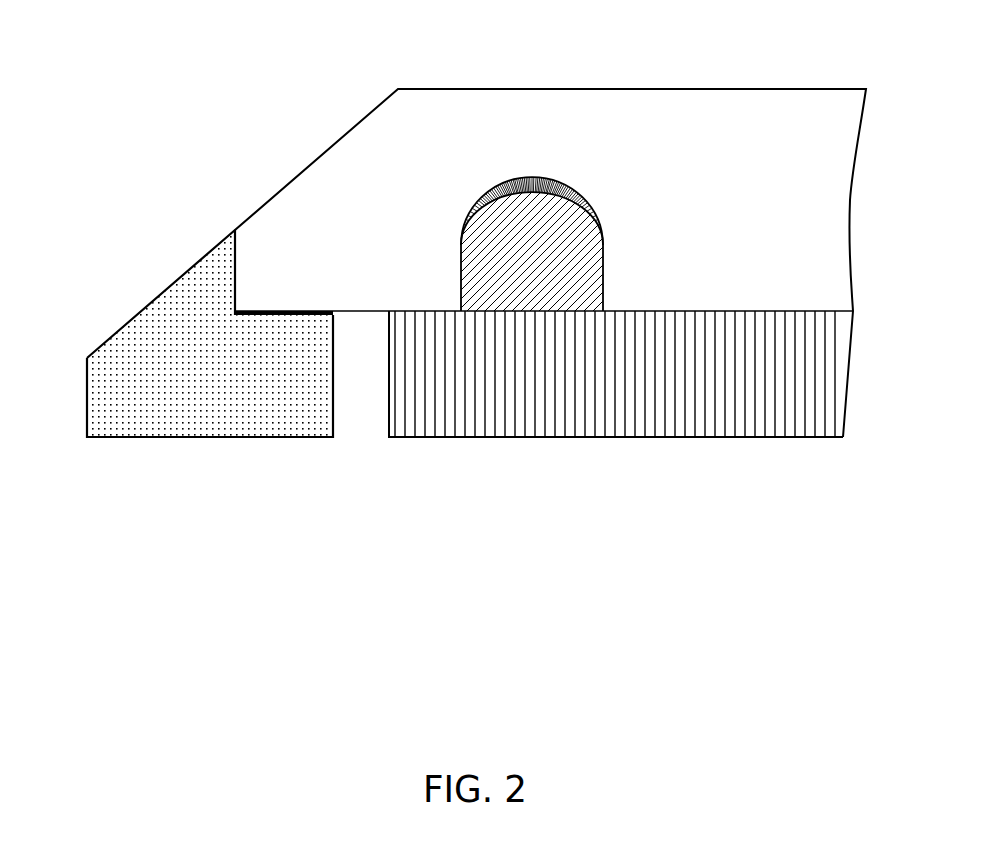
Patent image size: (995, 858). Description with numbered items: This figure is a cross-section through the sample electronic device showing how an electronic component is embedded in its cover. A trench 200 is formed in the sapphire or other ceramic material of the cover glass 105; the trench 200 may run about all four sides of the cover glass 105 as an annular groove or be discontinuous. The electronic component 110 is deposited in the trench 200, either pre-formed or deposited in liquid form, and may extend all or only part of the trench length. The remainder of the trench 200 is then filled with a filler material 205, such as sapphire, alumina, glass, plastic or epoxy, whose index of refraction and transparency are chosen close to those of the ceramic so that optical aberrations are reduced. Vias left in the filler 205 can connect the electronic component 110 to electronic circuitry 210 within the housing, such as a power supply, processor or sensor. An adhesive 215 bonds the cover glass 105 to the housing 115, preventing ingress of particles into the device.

The cover glass 105 is at (718, 110).
The electronic component 110 is at (537, 177).
The housing 115 is at (137, 315).
The trench 200 is at (457, 177).
The filler material 205 is at (461, 262).
The electronic circuitry 210 is at (537, 437).
The adhesive 215 is at (283, 316).